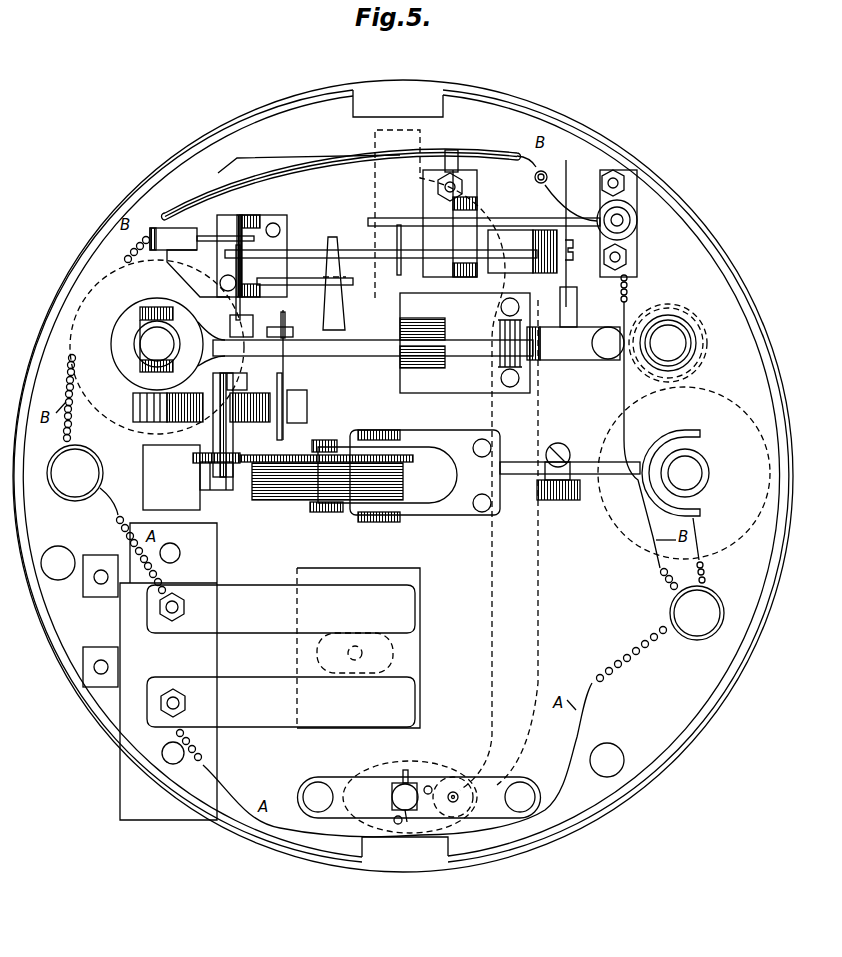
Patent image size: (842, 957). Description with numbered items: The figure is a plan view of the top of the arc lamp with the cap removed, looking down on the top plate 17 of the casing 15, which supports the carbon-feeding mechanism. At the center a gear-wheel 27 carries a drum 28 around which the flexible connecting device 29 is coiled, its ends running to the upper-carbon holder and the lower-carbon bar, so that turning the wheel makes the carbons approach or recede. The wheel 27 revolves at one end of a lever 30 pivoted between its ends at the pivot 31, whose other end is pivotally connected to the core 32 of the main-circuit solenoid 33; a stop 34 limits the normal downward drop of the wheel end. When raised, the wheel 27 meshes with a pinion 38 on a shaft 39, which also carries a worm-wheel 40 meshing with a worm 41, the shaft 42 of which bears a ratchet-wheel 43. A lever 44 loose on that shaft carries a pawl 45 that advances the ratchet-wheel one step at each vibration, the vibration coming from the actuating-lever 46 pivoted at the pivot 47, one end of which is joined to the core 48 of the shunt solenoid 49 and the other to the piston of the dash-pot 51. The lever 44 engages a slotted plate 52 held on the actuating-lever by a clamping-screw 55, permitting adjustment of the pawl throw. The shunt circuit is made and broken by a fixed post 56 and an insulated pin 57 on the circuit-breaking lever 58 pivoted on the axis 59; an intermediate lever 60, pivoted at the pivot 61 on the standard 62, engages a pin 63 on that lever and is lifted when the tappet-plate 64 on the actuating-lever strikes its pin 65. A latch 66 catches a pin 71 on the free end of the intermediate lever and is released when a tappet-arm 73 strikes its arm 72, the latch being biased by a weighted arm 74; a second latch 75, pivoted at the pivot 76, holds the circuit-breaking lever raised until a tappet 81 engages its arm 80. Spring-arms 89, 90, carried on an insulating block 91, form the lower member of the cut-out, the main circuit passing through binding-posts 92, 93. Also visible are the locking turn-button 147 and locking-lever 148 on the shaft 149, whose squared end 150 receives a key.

The casing 15 is at (399, 870).
The top plate 17 is at (332, 671).
The wheel 27 is at (293, 455).
The drum 28 is at (281, 500).
The flexible connecting device 29 is at (398, 472).
The lever 30 is at (520, 476).
The pivot 31 is at (386, 522).
The core 32 is at (709, 470).
The solenoid 33 is at (744, 538).
The stop 34 is at (560, 500).
The pinion 38 is at (192, 458).
The shaft 39 is at (205, 482).
The worm-wheel 40 is at (205, 424).
The worm 41 is at (182, 423).
The shaft 42 is at (137, 420).
The ratchet-wheel 43 is at (262, 424).
The lever 44 is at (285, 360).
The pawl 45 is at (308, 405).
The actuating-lever 46 is at (372, 356).
The pivot 47 is at (448, 395).
The core 48 is at (150, 345).
The solenoid 49 is at (74, 323).
The dash-pot 51 is at (700, 348).
The plate 52 is at (288, 332).
The clamping-screw 55 is at (268, 333).
The fixed plate or post 56 is at (630, 255).
The insulated pin 57 is at (638, 218).
The circuit-breaking lever 58 is at (518, 218).
The axis 59 is at (447, 233).
The intermediate lever 60 is at (348, 250).
The pivot 61 is at (563, 285).
The standard 62 is at (618, 281).
The pin or arm 63 is at (396, 234).
The tappet-plate 64 is at (232, 320).
The pin 65 is at (244, 312).
The latch 66 is at (275, 236).
The pin 71 is at (232, 214).
The arm 72 is at (296, 279).
The tappet-arm 73 is at (346, 317).
The weighted arm 74 is at (208, 223).
The latch 75 is at (602, 182).
The pivot 76 is at (580, 253).
The arm 80 is at (562, 305).
The tappet 81 is at (578, 326).
The spring-arm 89 is at (260, 728).
The spring-arm 90 is at (245, 590).
The block 91 is at (421, 656).
The binding-post 92 is at (690, 640).
The binding-post 93 is at (75, 473).
The locking turn-button 147 is at (453, 775).
The locking-lever 148 is at (373, 133).
The shaft 149 is at (395, 786).
The squared end 150 is at (391, 800).